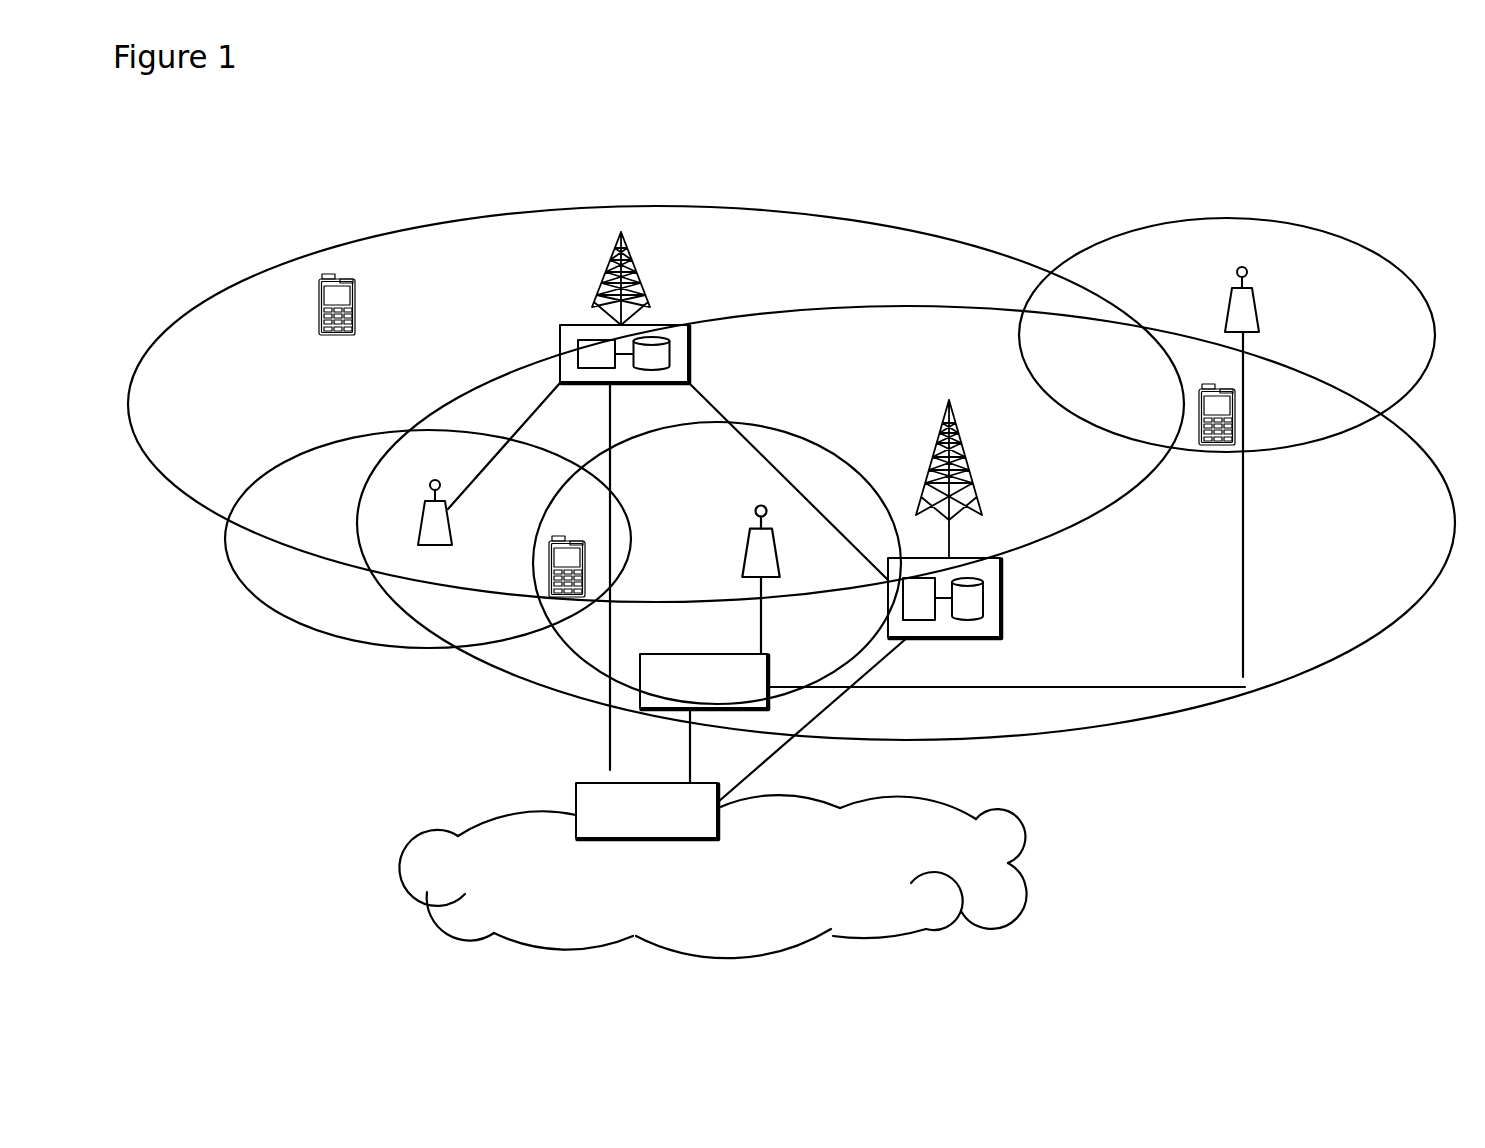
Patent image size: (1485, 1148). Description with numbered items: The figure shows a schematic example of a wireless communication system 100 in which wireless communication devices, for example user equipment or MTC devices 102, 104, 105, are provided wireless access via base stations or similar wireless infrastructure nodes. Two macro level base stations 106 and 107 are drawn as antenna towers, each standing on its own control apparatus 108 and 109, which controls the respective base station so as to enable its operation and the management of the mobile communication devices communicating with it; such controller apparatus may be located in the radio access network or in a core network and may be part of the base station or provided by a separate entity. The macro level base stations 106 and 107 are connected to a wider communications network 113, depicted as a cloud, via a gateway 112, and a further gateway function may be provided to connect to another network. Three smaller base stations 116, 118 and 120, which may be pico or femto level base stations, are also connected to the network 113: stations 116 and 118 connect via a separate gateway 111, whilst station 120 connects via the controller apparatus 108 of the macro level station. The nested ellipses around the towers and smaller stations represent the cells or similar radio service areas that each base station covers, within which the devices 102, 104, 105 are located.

The wireless communication system 100 is at (235, 264).
The wireless communication device 102 is at (318, 322).
The wireless communication device 104 is at (550, 570).
The wireless communication device 105 is at (1215, 446).
The macro level base station 106 is at (602, 287).
The macro level base station 107 is at (977, 480).
The control apparatus 108 is at (560, 341).
The control apparatus 109 is at (990, 628).
The gateway 111 is at (647, 686).
The gateway 112 is at (577, 783).
The wider communications network 113 is at (490, 849).
The smaller base station 116 is at (1227, 307).
The smaller base station 118 is at (763, 560).
The smaller base station 120 is at (423, 517).